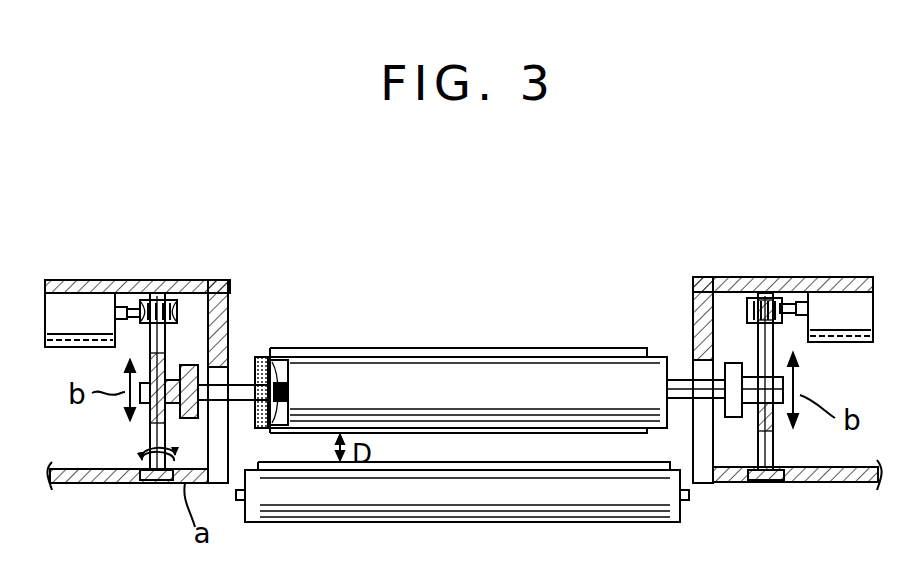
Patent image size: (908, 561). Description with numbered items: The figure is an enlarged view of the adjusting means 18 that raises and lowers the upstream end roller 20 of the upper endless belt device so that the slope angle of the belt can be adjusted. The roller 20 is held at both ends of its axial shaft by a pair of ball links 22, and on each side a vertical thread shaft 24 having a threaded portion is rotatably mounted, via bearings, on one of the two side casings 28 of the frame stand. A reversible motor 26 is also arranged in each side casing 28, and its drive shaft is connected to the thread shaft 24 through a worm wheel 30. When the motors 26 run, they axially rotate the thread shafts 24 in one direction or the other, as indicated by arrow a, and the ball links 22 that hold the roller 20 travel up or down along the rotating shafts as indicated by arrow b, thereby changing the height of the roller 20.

The adjusting means 18 is at (556, 231).
The roller 20 is at (471, 371).
The ball links 22 is at (205, 360).
The thread shaft 24 is at (188, 301).
The reversible motors 26 is at (78, 300).
The side casings 28 is at (98, 497).
The worm wheel 30 is at (175, 300).